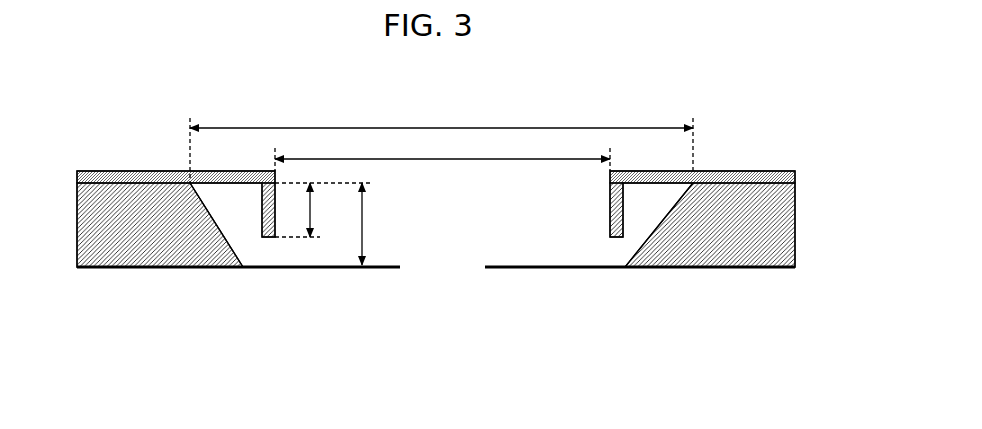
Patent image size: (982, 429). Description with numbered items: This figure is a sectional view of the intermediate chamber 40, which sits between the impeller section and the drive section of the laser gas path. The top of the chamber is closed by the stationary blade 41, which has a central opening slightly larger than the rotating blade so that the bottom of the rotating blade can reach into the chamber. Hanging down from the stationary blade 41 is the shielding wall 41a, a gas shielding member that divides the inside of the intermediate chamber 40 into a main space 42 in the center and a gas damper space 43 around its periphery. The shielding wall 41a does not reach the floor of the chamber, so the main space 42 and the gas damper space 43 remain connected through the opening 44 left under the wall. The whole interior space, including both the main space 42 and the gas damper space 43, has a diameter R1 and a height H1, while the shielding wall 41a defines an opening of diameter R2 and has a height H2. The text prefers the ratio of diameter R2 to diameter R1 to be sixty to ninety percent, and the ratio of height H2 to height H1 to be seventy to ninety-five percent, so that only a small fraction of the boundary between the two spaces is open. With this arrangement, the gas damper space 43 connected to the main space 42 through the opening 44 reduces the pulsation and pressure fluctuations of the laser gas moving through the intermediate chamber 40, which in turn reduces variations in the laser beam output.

The intermediate chamber 40 is at (206, 68).
The stationary blade 41 is at (138, 170).
The shielding wall 41a is at (262, 215).
The main space 42 is at (485, 222).
The gas damper space 43 is at (647, 213).
The opening 44 is at (265, 252).
The diameter of intermediate chamber space R1 is at (441, 142).
The diameter of shielding wall opening R2 is at (442, 163).
The height of intermediate chamber space H1 is at (362, 222).
The height of shielding wall H2 is at (310, 208).